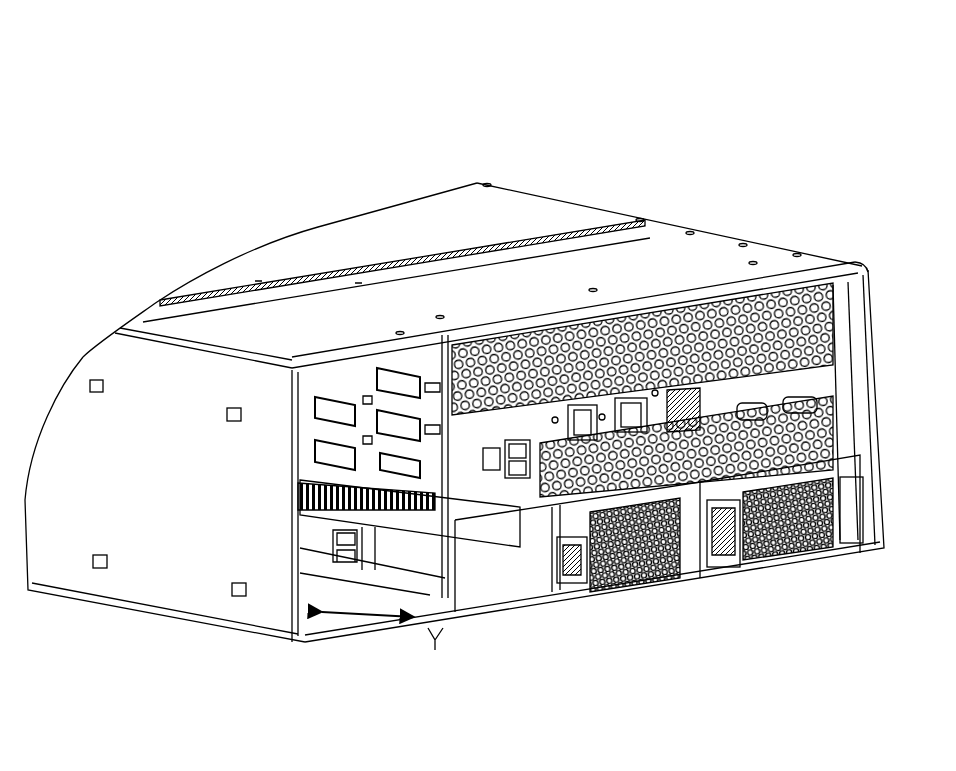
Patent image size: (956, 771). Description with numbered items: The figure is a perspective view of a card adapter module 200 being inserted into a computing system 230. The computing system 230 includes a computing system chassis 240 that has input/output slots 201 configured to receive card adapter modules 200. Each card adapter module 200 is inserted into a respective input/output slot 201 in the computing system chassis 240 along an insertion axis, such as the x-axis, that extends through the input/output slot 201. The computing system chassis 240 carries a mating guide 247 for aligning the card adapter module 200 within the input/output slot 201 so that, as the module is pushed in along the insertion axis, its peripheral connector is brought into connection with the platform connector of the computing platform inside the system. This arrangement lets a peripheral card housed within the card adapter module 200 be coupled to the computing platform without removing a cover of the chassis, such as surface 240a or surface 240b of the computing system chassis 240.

The computing system 230 is at (226, 60).
The computing system chassis 240 is at (345, 322).
The surface 240a is at (212, 503).
The surface 240b is at (312, 339).
The input/output slot 201 is at (373, 394).
The mating guide 247 is at (406, 434).
The card adapter module 200 is at (548, 588).